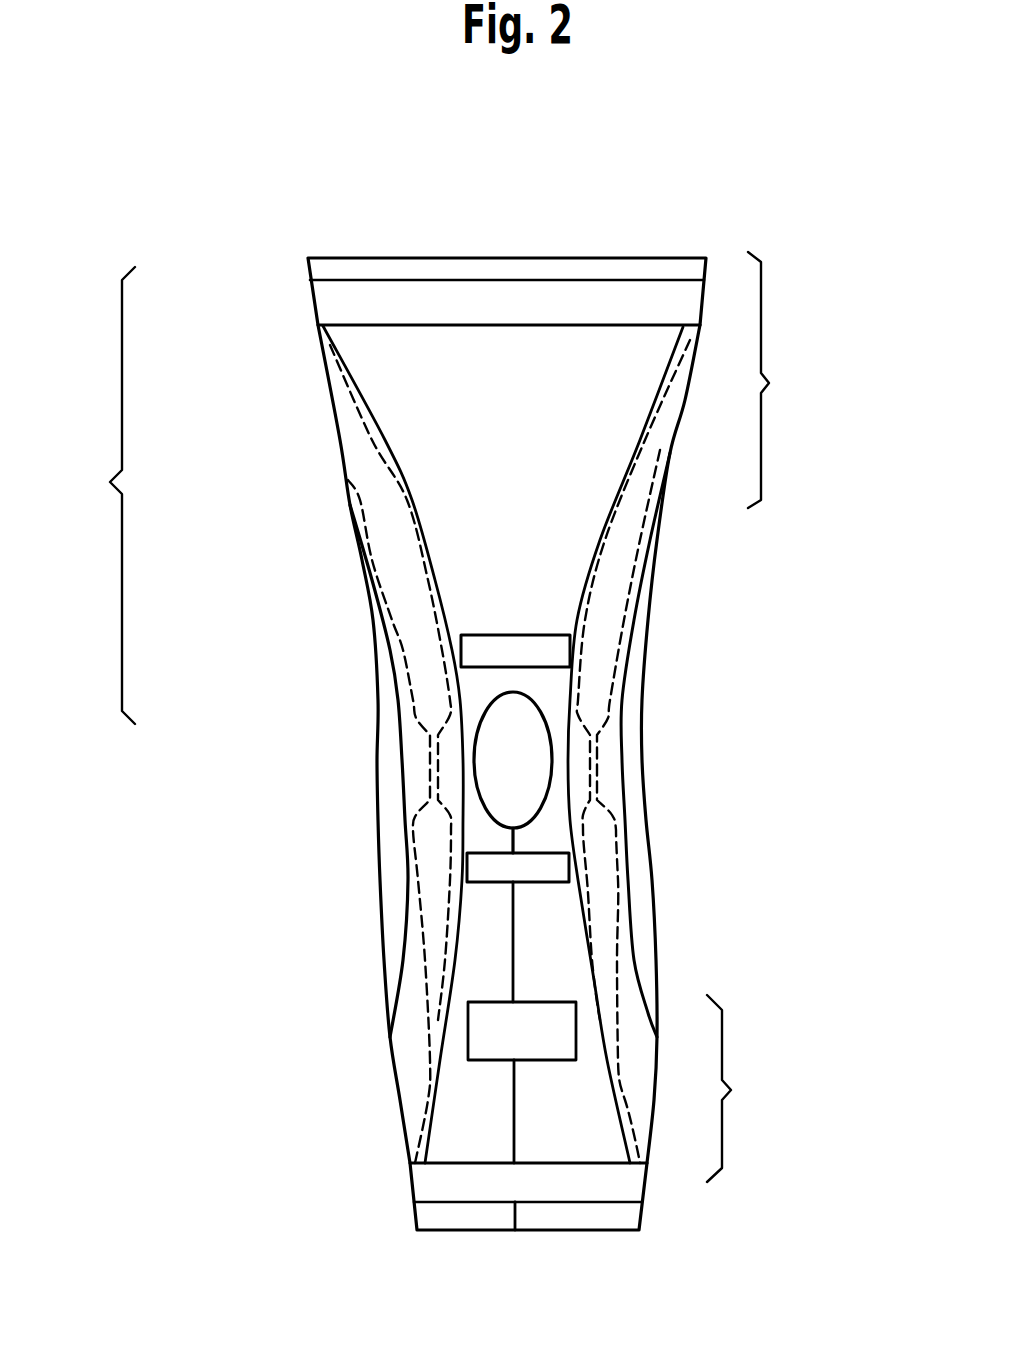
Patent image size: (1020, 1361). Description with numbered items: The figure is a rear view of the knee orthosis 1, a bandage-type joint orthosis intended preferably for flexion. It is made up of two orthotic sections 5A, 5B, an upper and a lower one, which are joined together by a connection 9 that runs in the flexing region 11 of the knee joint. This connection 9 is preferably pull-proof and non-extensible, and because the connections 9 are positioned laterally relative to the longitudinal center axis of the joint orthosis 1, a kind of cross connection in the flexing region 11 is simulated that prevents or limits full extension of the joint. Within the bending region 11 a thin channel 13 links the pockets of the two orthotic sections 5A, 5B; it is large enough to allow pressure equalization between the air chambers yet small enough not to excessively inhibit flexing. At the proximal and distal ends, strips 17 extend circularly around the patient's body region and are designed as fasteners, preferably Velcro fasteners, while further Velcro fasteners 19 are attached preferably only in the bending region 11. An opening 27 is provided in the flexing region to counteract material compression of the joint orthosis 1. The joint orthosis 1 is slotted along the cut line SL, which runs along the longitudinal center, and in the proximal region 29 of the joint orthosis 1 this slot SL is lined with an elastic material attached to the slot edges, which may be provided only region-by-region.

The knee orthosis 1 is at (662, 216).
The orthotic section 5A is at (778, 380).
The orthotic section 5B is at (737, 1088).
The connection 9 is at (624, 748).
The flexing region 11 is at (650, 843).
The channel 13 is at (432, 777).
The strip 17 is at (343, 298).
The fastener 19 is at (477, 652).
The opening 27 is at (525, 765).
The proximal region 29 is at (106, 495).
The cut line SL is at (515, 1140).